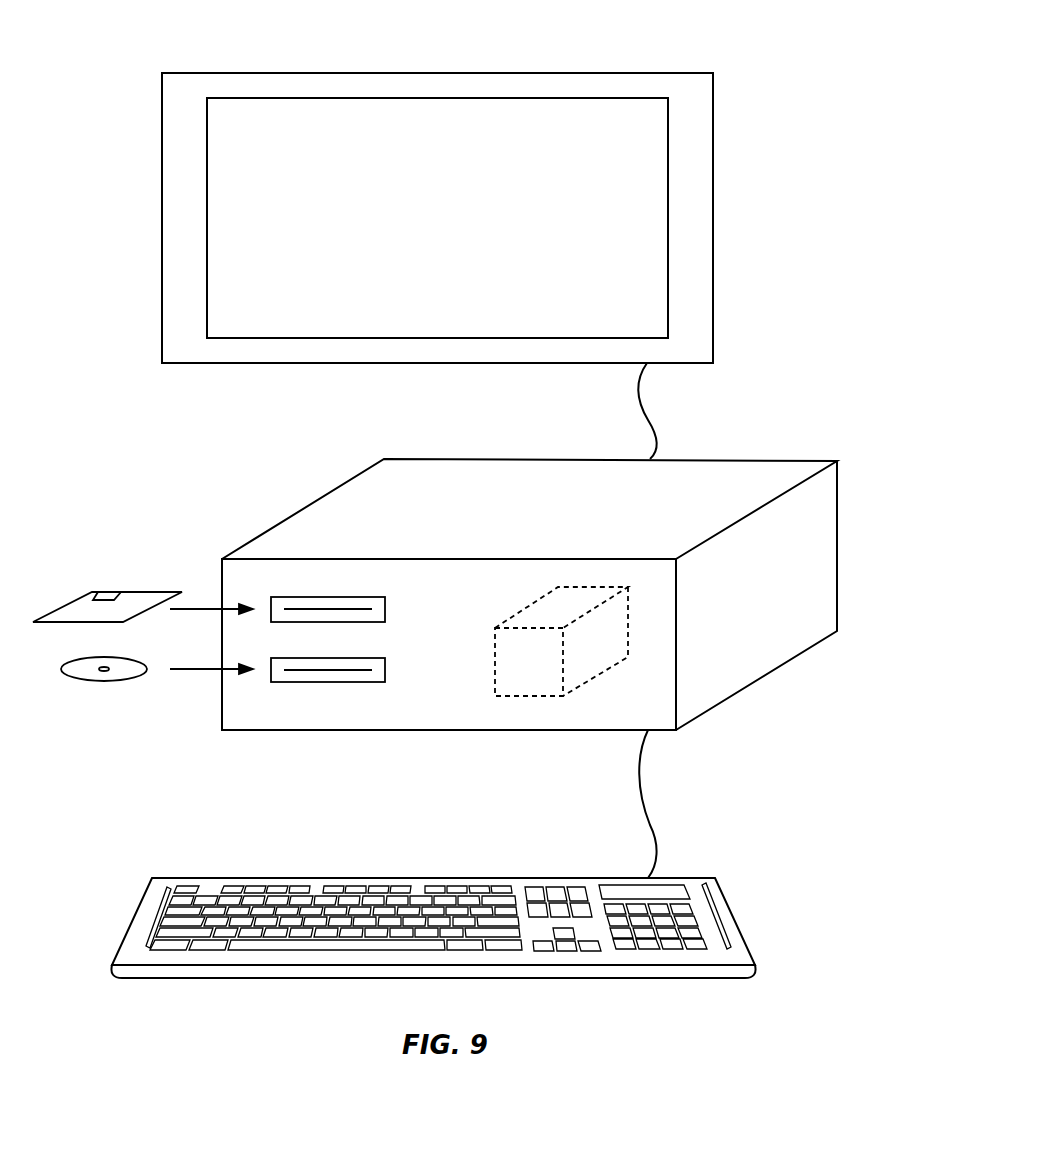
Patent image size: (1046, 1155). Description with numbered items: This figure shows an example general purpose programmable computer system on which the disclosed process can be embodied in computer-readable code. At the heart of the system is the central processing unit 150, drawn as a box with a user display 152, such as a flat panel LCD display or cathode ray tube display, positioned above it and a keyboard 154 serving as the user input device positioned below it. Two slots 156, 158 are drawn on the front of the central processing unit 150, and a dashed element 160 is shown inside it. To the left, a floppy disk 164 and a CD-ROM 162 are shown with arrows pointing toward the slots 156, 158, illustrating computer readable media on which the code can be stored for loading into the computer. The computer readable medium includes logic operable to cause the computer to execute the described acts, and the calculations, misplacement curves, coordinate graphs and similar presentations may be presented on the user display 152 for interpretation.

The central processing unit 150 is at (769, 459).
The user display 152 is at (652, 73).
The keyboard 154 is at (695, 878).
The disk drive 156 is at (349, 658).
The disk drive 158 is at (349, 597).
The memory / storage device 160 is at (494, 632).
The CD-ROM 162 is at (137, 660).
The floppy disk 164 is at (138, 592).